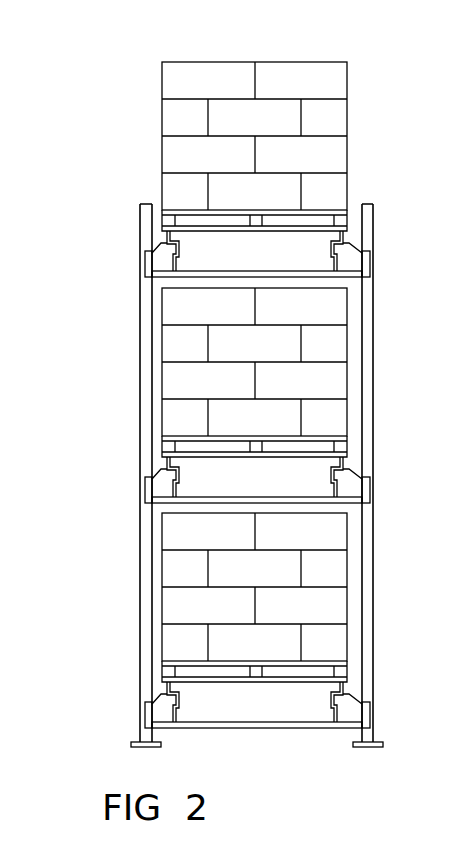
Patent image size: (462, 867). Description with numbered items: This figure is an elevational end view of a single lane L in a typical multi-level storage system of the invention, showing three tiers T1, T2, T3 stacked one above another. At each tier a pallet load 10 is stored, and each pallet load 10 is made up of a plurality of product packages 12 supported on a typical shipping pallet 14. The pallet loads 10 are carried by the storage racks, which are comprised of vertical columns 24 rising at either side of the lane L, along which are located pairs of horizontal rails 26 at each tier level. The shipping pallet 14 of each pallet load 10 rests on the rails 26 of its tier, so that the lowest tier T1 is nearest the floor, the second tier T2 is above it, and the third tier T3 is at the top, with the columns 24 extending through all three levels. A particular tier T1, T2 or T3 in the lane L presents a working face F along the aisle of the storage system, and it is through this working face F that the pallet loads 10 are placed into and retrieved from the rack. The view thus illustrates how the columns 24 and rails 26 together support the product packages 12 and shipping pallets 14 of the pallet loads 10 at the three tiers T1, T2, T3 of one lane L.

The pallet load 10 is at (358, 83).
The product packages 12 is at (308, 92).
The shipping pallet 14 is at (340, 222).
The vertical columns 24 is at (145, 533).
The horizontal rails 26 is at (183, 252).
The first tier T1 is at (382, 587).
The second tier T2 is at (382, 369).
The third tier T3 is at (358, 137).
The lane L is at (198, 48).
The working face F is at (275, 735).